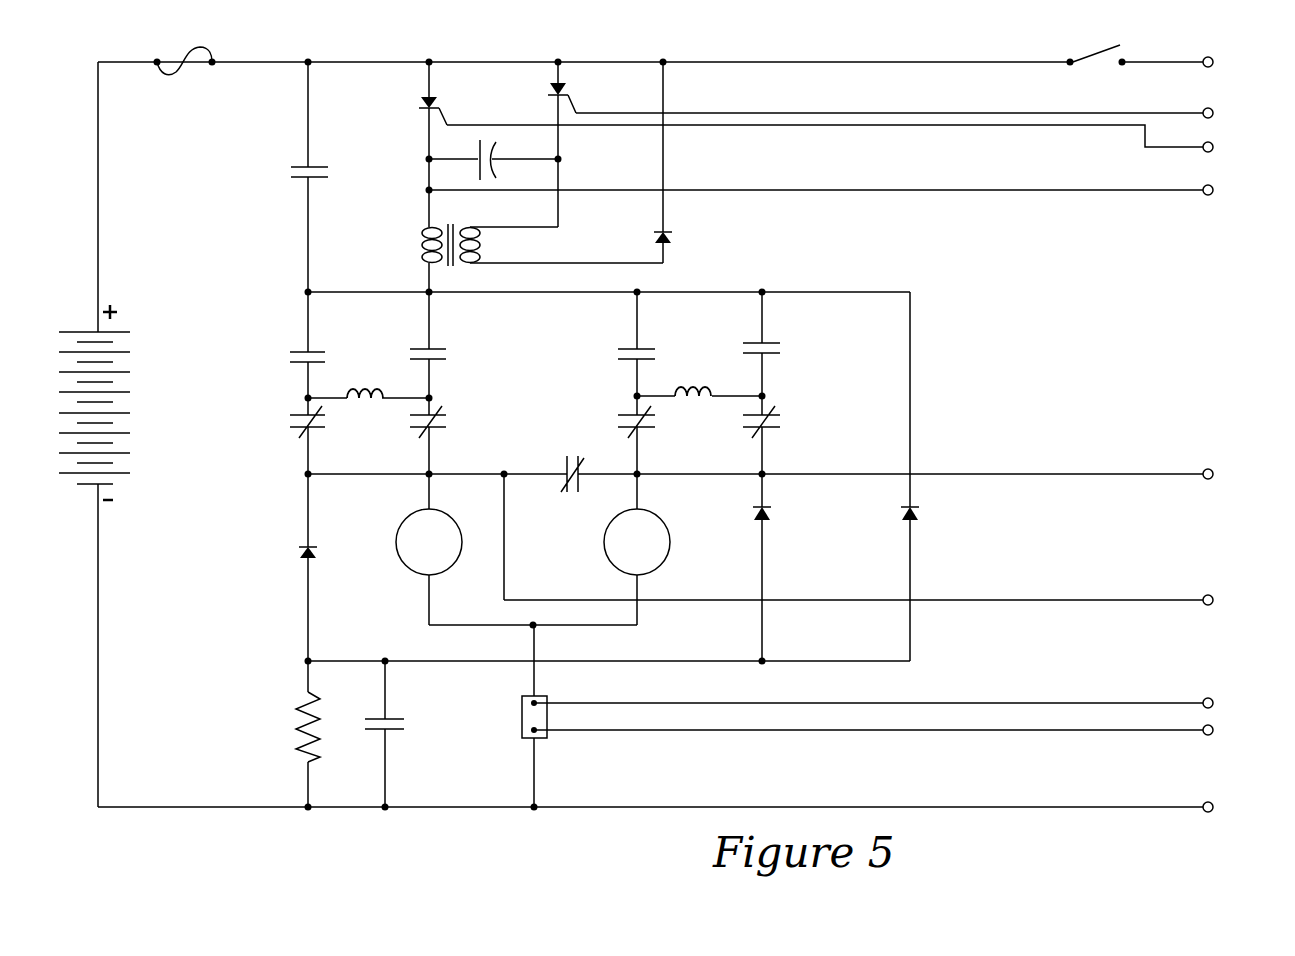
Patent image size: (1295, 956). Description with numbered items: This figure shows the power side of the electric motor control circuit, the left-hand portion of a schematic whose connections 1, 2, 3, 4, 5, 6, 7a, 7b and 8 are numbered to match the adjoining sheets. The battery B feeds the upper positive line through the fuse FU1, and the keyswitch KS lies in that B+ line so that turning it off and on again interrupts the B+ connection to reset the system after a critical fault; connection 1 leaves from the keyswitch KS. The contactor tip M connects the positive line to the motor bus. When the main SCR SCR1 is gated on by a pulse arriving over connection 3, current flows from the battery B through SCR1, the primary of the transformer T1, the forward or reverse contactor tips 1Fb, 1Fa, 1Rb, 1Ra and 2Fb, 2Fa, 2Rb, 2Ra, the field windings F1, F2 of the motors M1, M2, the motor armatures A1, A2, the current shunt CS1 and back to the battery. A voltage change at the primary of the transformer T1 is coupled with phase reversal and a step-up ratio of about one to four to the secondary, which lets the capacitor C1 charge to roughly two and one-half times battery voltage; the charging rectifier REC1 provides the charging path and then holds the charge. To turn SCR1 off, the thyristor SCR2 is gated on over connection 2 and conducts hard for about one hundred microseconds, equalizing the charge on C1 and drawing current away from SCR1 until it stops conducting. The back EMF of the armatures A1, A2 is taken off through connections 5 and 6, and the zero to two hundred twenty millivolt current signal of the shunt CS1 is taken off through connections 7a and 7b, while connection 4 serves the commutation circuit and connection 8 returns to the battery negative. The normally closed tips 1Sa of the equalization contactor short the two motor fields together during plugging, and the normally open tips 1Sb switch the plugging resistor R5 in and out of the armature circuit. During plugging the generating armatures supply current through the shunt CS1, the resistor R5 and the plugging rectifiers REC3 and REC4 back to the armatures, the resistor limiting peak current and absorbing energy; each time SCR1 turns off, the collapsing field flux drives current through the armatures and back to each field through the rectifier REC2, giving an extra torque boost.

The battery B is at (111, 402).
The fuse FU1 is at (165, 69).
The keyswitch KS is at (1097, 58).
The contactor M is at (296, 166).
The main SCR SCR1 is at (421, 100).
The thyristor SCR2 is at (550, 90).
The capacitor C1 is at (479, 154).
The transformer T1 is at (482, 252).
The charging rectifier REC1 is at (652, 234).
The forward contactor 1F tips 1Fb is at (296, 352).
The forward contactor 1F tips 1Fa is at (296, 414).
The field winding F1 is at (364, 386).
The reverse contactor 1R tips 1Rb is at (442, 349).
The reverse contactor 1R tips 1Ra is at (442, 430).
The forward contactor 2F tips 2Fb is at (626, 350).
The forward contactor 2F tips 2Fa is at (626, 414).
The field winding F2 is at (694, 385).
The reverse contactor 2R tips 2Rb is at (776, 343).
The reverse contactor 2R tips 2Ra is at (776, 430).
The equalization contactor tips 1Sa is at (572, 456).
The motor 1 M1 is at (378, 521).
The motor 2 M2 is at (585, 528).
The motor armature A1 is at (429, 542).
The motor armature A2 is at (637, 542).
The plugging rectifier REC3 is at (296, 547).
The plugging rectifier REC4 is at (766, 512).
The rectifier REC2 is at (914, 512).
The resistor R5 is at (294, 726).
The equalization contactor tips 1Sb is at (392, 731).
The current shunt CS1 is at (521, 710).
The connection 1 is at (1229, 63).
The connection 2 is at (1229, 114).
The connection 3 is at (1229, 143).
The connection 4 is at (1229, 190).
The connection 5 is at (1229, 474).
The connection 6 is at (1229, 600).
The connection 7a is at (1232, 703).
The connection 7b is at (1233, 730).
The connection 8 is at (1229, 807).